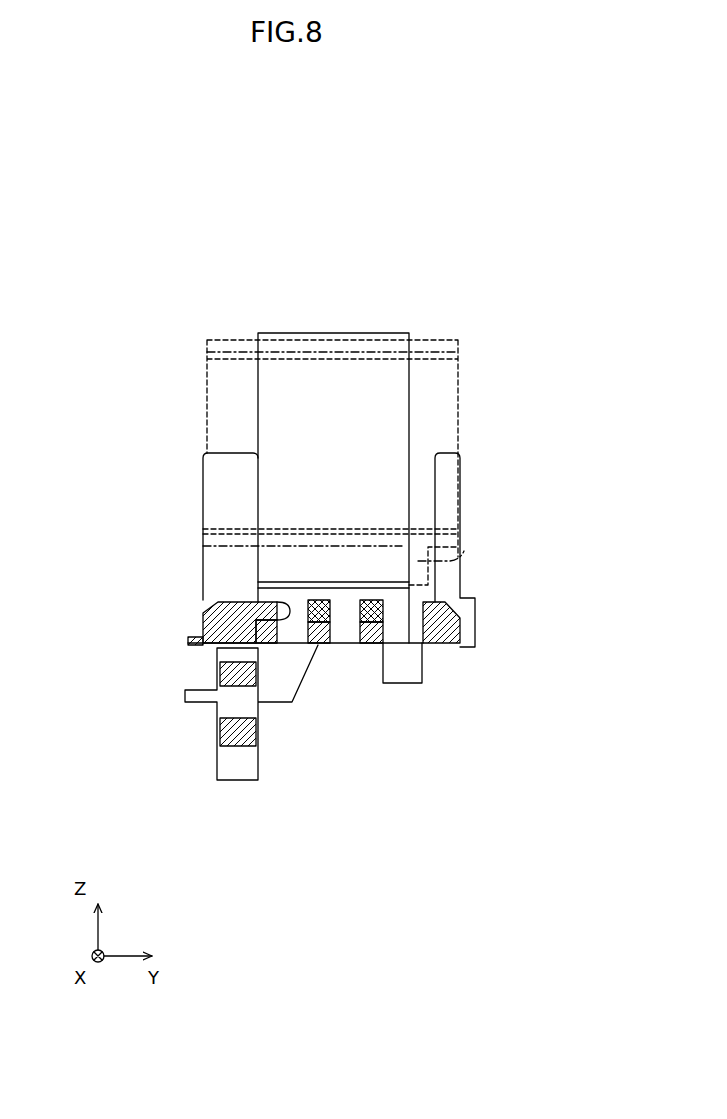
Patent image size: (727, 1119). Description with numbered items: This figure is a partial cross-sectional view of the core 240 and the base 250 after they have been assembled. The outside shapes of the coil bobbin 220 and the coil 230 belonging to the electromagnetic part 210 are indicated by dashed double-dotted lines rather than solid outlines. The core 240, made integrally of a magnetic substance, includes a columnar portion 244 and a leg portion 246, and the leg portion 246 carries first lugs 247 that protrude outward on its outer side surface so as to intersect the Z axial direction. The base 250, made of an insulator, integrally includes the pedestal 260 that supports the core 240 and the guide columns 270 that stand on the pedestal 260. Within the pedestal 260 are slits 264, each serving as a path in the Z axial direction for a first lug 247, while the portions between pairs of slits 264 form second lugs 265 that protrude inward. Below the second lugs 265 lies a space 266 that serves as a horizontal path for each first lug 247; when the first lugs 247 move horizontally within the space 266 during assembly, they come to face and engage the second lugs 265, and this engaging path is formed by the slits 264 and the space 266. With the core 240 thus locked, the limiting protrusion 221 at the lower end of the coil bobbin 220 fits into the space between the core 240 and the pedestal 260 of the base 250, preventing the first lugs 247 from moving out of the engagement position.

The electromagnetic part 210 is at (188, 399).
The coil bobbin 220 is at (458, 343).
The limiting protrusion 221 is at (465, 555).
The coil 230 is at (432, 424).
The core 240 is at (388, 323).
The columnar portion 244 is at (382, 396).
The leg portion 246 is at (423, 652).
The first lug 247 is at (262, 646).
The base 250 is at (186, 763).
The pedestal 260 is at (203, 620).
The slit 264 is at (280, 601).
The second lug 265 is at (330, 601).
The space 266 is at (288, 636).
The guide column 270 is at (230, 464).